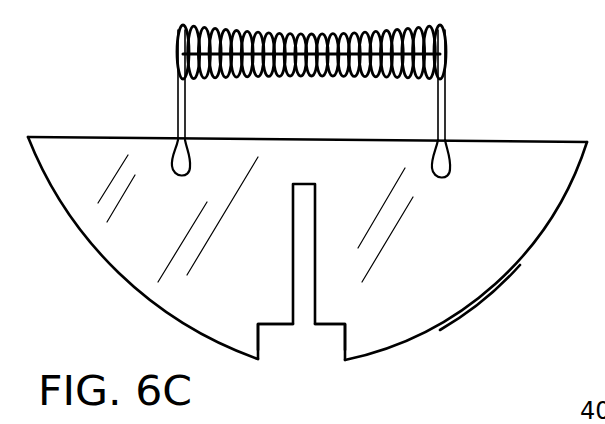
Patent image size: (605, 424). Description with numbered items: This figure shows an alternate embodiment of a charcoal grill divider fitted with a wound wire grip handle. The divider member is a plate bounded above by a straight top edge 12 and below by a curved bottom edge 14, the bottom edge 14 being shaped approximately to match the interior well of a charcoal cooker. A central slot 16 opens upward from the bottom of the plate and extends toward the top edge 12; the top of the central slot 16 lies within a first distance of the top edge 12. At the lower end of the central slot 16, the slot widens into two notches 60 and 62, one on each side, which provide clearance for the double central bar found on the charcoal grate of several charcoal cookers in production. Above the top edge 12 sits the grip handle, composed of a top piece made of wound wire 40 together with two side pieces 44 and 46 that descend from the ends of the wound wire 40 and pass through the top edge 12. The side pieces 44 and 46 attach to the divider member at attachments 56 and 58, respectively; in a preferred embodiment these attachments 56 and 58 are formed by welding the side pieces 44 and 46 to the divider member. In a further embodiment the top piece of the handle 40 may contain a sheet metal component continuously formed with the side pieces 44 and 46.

The top edge 12 is at (567, 140).
The bottom edge 14 is at (473, 304).
The central slot 16 is at (302, 305).
The wound wire top piece 40 is at (300, 77).
The first side piece 44 is at (178, 125).
The second side piece 46 is at (447, 100).
The attachment 56 is at (182, 165).
The attachment 58 is at (440, 165).
The notch 60 is at (260, 334).
The notch 62 is at (347, 340).